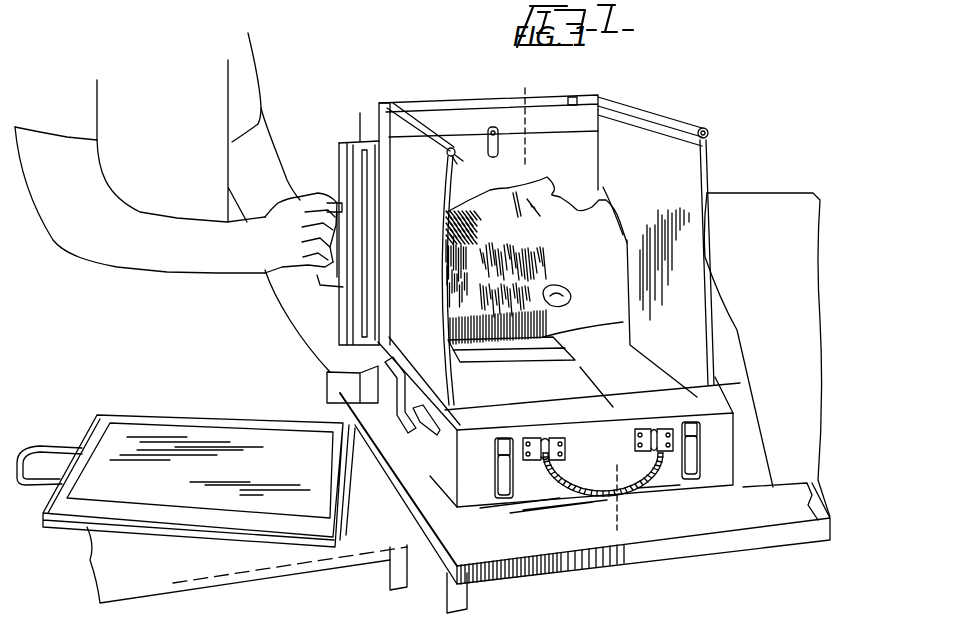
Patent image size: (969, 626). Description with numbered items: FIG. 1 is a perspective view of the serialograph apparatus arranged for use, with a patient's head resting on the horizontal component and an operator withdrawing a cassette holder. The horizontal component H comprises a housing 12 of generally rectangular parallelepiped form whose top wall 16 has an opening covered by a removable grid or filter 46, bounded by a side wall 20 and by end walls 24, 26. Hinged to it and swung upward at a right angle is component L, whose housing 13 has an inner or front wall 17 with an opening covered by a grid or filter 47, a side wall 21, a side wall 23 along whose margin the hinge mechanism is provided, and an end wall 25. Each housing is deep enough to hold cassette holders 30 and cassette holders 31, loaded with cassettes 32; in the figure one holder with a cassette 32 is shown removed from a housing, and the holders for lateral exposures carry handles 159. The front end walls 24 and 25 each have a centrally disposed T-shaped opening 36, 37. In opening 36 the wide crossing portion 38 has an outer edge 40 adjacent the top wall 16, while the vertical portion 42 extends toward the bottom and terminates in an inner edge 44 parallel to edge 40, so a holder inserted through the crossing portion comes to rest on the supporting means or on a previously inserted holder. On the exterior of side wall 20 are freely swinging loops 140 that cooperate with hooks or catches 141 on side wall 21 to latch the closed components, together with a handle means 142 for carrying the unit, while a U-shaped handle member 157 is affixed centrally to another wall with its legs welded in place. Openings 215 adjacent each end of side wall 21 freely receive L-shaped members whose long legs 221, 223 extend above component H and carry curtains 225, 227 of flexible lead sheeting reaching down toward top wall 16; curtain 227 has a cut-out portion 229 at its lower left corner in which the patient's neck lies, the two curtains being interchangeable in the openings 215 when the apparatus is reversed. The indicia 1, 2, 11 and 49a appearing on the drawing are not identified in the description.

The apparatus 1 is at (449, 93).
The section line 2 is at (513, 90).
The section line 11 is at (487, 513).
The housing 12 is at (722, 485).
The housing 13 is at (382, 92).
The top wall 16 is at (632, 392).
The inner or front wall 17 is at (391, 127).
The side wall 20 is at (606, 456).
The side wall 21 is at (382, 108).
The side wall 23 is at (360, 390).
The end wall 24 is at (453, 454).
The end wall 25 is at (360, 118).
The end wall 26 is at (735, 437).
The cassette holder 30 is at (70, 523).
The cassette holder 31 is at (342, 161).
The cassette 32 is at (360, 193).
The T-shaped opening 36 is at (347, 427).
The T-shaped opening 37 is at (372, 222).
The crossing portion 38 is at (395, 372).
The outer edge 40 is at (440, 382).
The vertical portion 42 is at (402, 430).
The inner edge 44 is at (411, 453).
The grid or filter 46 is at (618, 352).
The grid or filter 47 is at (586, 162).
The freely swinging loops 140 is at (495, 476).
The hooks or catches 141 is at (571, 96).
The handle means 142 is at (570, 490).
The U-shaped handle member 157 is at (42, 436).
The handles 159 is at (317, 277).
The openings 215 is at (677, 608).
The long leg 221 is at (475, 167).
The long leg 223 is at (709, 133).
The curtain 225 is at (432, 307).
The curtain 227 is at (683, 238).
The cut-out portion 229 is at (620, 213).
The element 49a is at (741, 608).